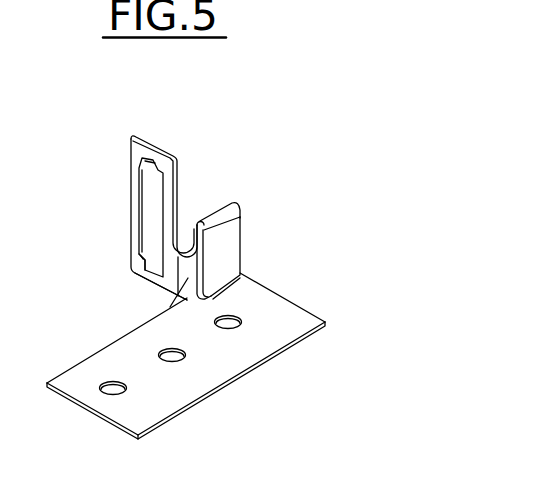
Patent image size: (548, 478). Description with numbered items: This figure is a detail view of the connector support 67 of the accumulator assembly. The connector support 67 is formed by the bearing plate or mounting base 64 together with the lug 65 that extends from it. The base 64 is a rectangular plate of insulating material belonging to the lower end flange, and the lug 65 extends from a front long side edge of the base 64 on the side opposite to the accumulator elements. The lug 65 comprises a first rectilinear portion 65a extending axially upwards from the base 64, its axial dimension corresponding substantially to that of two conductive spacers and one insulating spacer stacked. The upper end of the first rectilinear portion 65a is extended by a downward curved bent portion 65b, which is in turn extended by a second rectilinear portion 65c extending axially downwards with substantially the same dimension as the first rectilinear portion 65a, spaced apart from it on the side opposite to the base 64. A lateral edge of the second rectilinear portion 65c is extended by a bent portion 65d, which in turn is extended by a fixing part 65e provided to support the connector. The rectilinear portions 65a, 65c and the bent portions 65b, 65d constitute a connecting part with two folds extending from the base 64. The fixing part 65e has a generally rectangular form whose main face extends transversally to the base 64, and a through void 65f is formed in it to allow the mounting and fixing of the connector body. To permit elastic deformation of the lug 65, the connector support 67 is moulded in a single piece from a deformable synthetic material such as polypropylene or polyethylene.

The bearing plate 64 is at (198, 357).
The lug 65 is at (173, 223).
The first rectilinear portion 65a is at (236, 229).
The bent portion 65b is at (215, 218).
The second rectilinear portion 65c is at (203, 259).
The bent portion 65d is at (157, 302).
The fixing part 65e is at (138, 258).
The through void 65f is at (147, 186).
The connector support 67 is at (255, 377).